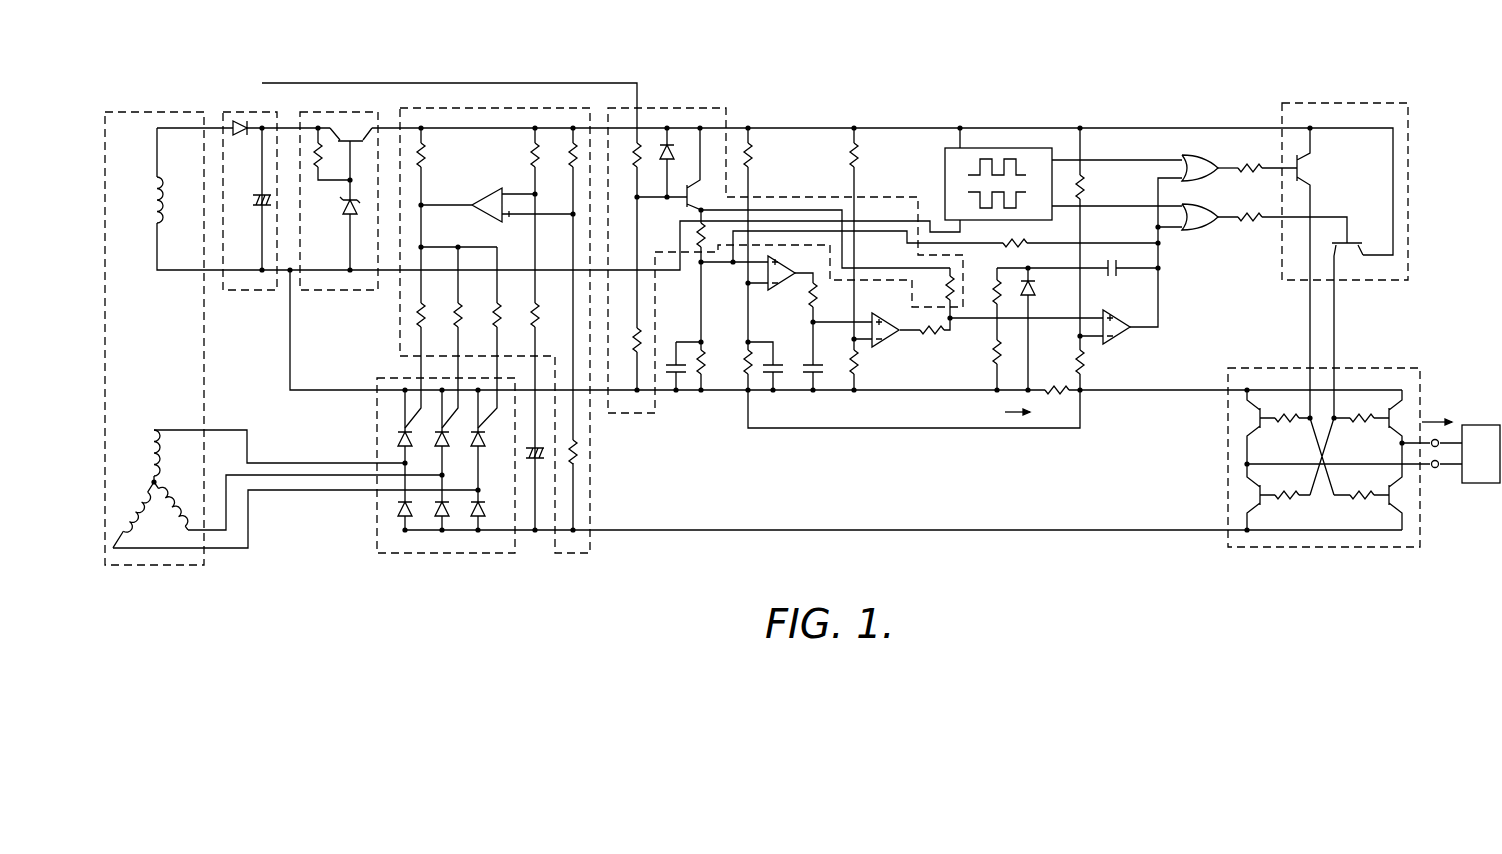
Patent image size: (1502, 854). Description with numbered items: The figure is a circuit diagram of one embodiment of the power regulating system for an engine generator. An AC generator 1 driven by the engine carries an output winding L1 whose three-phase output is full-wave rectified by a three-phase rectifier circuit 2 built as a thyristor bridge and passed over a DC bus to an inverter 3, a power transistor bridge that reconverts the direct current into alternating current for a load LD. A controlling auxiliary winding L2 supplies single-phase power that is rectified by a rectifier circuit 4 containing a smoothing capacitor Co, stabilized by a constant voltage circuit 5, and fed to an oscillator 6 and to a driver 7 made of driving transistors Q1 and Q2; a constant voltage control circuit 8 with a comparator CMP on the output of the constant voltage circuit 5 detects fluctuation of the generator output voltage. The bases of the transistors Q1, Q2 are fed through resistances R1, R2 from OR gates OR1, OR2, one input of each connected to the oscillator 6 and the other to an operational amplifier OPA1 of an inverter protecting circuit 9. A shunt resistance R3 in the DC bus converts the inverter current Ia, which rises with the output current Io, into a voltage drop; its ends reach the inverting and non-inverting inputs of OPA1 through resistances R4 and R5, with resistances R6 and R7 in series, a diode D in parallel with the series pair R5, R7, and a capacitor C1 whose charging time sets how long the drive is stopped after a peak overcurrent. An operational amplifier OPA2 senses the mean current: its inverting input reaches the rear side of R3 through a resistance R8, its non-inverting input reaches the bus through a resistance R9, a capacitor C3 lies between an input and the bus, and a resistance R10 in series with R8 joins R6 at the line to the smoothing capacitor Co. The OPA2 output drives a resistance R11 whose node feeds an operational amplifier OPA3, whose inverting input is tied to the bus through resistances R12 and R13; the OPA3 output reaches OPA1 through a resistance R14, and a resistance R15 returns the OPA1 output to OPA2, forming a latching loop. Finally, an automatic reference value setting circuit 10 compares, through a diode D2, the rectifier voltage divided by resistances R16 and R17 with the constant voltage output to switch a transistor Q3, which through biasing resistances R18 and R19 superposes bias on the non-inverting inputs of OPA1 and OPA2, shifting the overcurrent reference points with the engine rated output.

The AC generator 1 is at (291, 315).
The three-phase rectifier circuit 2 is at (377, 510).
The inverter 3 is at (1375, 368).
The rectifier circuit 4 is at (250, 178).
The constant voltage circuit 5 is at (340, 112).
The oscillator 6 is at (1000, 148).
The driver 7 is at (1345, 236).
The constant voltage control circuit 8 is at (495, 295).
The inverter protecting circuit 9 is at (940, 434).
The automatic reference value setting circuit 10 is at (883, 231).
The output winding L1 is at (293, 490).
The controlling auxiliary winding L2 is at (140, 200).
The smoothing capacitor Co is at (250, 193).
The comparator CMP is at (497, 197).
The resistance R16 is at (640, 150).
The diode D is at (674, 162).
The diode D2 is at (1035, 329).
The switching transistor Q3 is at (695, 198).
The biasing resistance R19 is at (700, 236).
The resistance R15 is at (1030, 236).
The operational amplifier OPA2 is at (780, 264).
The resistance R11 is at (799, 295).
The biasing resistance R18 is at (945, 285).
The resistance R17 is at (638, 340).
The resistance R10 is at (765, 239).
The resistance R8 is at (745, 375).
The resistance R9 is at (700, 375).
The capacitor C3 is at (674, 350).
The operational amplifier OPA3 is at (890, 335).
The resistance R14 is at (1005, 337).
The resistance R13 is at (872, 239).
The resistance R12 is at (871, 370).
The resistance R7 is at (996, 290).
The resistance R5 is at (983, 365).
The capacitor C1 is at (1132, 278).
The resistance R6 is at (1094, 239).
The resistance R4 is at (1093, 363).
The current detection resistance R3 is at (1056, 381).
The operational amplifier OPA1 is at (1142, 266).
The current flowing to the inverter Ia is at (1027, 413).
The OR gate OR1 is at (1208, 158).
The OR gate OR2 is at (1198, 229).
The resistance R1 is at (1267, 158).
The resistance R2 is at (1292, 229).
The driving transistor Q1 is at (1315, 273).
The driving transistor Q2 is at (1347, 330).
The load LD is at (1481, 454).
The output current Io is at (1437, 411).